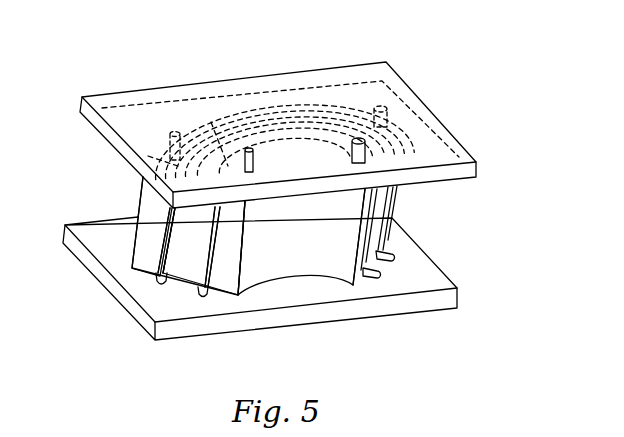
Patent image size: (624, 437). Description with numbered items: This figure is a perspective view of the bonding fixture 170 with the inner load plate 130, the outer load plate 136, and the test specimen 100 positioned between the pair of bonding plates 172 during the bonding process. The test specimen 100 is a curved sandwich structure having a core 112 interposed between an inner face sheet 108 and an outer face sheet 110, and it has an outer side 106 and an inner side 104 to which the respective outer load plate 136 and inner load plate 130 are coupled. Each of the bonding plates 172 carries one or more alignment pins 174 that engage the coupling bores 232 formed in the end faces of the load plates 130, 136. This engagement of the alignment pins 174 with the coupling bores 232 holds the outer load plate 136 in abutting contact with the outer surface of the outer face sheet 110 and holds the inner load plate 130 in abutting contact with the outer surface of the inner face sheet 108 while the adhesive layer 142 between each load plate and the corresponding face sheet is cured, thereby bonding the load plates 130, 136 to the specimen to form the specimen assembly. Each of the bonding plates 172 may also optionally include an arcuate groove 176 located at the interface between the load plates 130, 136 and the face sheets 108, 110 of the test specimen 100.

The bonding fixture 170 is at (163, 50).
The bonding plates 172 is at (104, 97).
The alignment pins 174 is at (211, 122).
The coupling bores 232 is at (310, 112).
The outer load plate 136 is at (138, 208).
The outer face sheet 110 is at (157, 232).
The inner face sheet 108 is at (235, 295).
The arcuate groove 176 is at (158, 278).
The adhesive layer 142 is at (204, 290).
The inner load plate 130 is at (290, 276).
The outer side 106 is at (388, 206).
The inner side 104 is at (372, 233).
The test specimen 100 is at (375, 243).
The core 112 is at (385, 256).